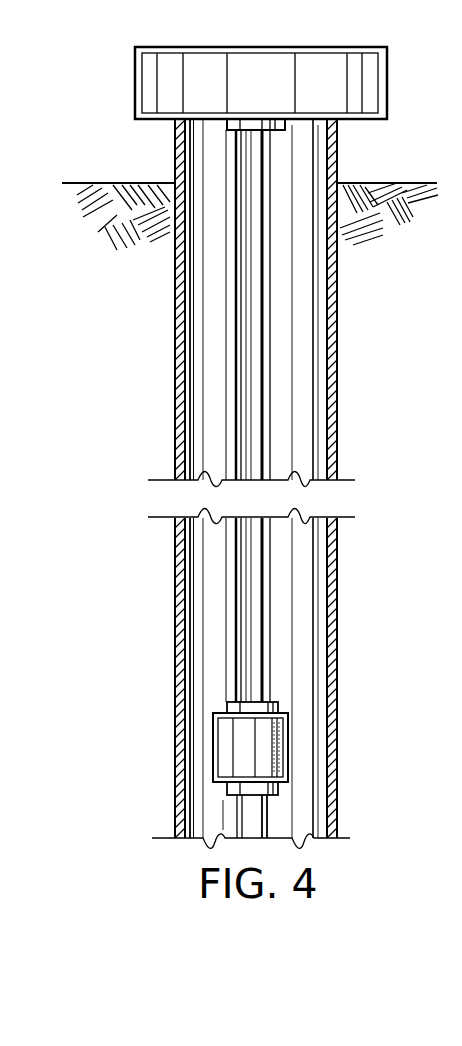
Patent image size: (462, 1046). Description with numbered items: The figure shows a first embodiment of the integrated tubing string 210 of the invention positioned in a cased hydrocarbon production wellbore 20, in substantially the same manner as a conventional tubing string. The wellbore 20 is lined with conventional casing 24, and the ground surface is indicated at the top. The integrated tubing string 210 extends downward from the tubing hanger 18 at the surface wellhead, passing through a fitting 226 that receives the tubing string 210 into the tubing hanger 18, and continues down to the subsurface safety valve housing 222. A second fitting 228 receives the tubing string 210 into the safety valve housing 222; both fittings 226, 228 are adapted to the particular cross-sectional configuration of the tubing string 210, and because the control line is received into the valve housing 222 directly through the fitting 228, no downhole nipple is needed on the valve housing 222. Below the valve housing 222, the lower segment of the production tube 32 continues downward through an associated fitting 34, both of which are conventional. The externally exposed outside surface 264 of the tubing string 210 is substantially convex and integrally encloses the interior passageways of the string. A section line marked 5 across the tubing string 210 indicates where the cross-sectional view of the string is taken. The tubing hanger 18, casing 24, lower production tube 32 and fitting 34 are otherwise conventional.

The tubing hanger 18 is at (388, 76).
The hydrocarbon production wellbore 20 is at (303, 448).
The casing 24 is at (192, 444).
The lower segment of the production tube 32 is at (268, 815).
The fitting 34 is at (275, 788).
The integrated tubing string 210 is at (236, 357).
The safety valve housing 222 is at (232, 758).
The fitting 226 is at (227, 124).
The fitting 228 is at (227, 705).
The outside surface of the tubing string 264 is at (257, 405).
The section line 5- 5 is at (295, 285).